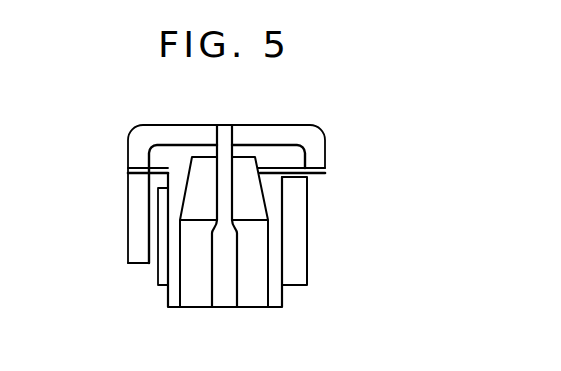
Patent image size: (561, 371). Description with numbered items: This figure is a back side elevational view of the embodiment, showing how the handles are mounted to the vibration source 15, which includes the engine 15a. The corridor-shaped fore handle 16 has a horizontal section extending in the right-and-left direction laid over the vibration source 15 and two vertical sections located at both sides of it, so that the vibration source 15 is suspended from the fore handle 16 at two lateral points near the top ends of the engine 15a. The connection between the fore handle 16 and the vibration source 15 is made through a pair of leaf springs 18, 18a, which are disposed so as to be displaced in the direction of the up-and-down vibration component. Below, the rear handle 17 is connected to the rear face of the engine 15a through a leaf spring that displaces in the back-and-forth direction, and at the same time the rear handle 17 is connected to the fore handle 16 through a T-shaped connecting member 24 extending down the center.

The vibration source 15 is at (203, 167).
The engine 15a is at (248, 165).
The T-shaped connecting member 24 is at (224, 140).
The fore handle 16 is at (315, 143).
The leaf spring 18 is at (303, 175).
The leaf spring 18a is at (153, 173).
The rear handle 17 is at (224, 292).